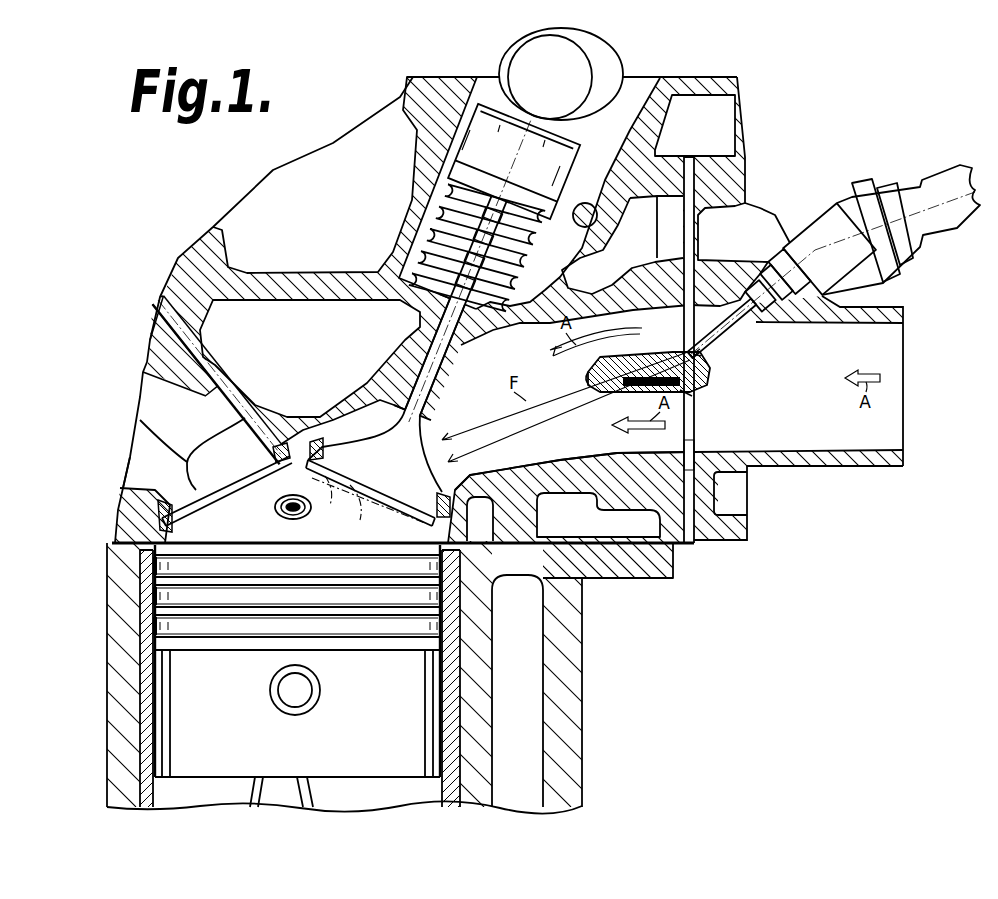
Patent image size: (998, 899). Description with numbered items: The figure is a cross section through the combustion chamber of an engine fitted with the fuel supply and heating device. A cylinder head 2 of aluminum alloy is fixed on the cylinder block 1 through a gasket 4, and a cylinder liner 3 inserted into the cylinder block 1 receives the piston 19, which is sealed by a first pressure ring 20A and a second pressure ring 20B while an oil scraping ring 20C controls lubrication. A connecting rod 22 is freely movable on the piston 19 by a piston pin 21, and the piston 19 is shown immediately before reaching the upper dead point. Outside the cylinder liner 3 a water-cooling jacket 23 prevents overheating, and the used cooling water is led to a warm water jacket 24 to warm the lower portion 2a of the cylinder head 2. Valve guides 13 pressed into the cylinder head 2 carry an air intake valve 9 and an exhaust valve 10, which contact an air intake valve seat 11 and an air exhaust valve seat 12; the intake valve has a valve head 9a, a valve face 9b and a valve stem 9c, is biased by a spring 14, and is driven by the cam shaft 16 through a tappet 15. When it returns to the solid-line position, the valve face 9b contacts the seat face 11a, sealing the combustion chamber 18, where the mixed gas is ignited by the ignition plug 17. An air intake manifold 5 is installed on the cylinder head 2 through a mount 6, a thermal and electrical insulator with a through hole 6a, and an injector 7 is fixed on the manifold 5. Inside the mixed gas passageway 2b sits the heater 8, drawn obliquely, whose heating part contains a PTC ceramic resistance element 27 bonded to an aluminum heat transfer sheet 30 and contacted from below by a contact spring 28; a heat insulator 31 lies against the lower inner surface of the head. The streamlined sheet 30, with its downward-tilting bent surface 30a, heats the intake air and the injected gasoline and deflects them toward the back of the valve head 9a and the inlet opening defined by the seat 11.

The cylinder block 1 is at (579, 660).
The cylinder head 2 is at (200, 252).
The lower portion of the cylinder head 2a is at (569, 461).
The mixed gas passageway 2b is at (575, 354).
The cylinder liner 3 is at (146, 662).
The gasket 4 is at (125, 552).
The air intake manifold 5 is at (880, 308).
The mount 6 is at (695, 244).
The insulator through hole 6a is at (695, 453).
The injector 7 is at (852, 183).
The heater 8 is at (693, 354).
The air intake valve 9 is at (355, 498).
The valve head 9a is at (368, 452).
The valve face 9b is at (366, 515).
The valve stem 9c is at (426, 412).
The exhaust valve 10 is at (185, 462).
The air intake valve seat 11 is at (453, 487).
The face of the air intake valve seat 11a is at (426, 524).
The air exhaust valve seat 12 is at (140, 480).
The valve guide 13 is at (210, 348).
The spring 14 is at (456, 212).
The tappet 15 is at (473, 100).
The cam shaft 16 is at (606, 57).
The ignition plug 17 is at (276, 508).
The combustion chamber 18 is at (158, 513).
The piston 19 is at (148, 700).
The first pressure ring 20A is at (152, 562).
The second pressure ring 20B is at (152, 592).
The oil scraping ring 20C is at (152, 620).
The piston pin 21 is at (321, 690).
The connecting rod 22 is at (300, 794).
The water-cooling jacket 23 is at (121, 735).
The warm water jacket 24 is at (620, 565).
The ceramic electrical resistance element 27 is at (633, 375).
The contact spring 28 is at (625, 387).
The heat transfer sheet 30 is at (611, 364).
The bent surface 30a is at (589, 375).
The heat insulator 31 is at (685, 394).